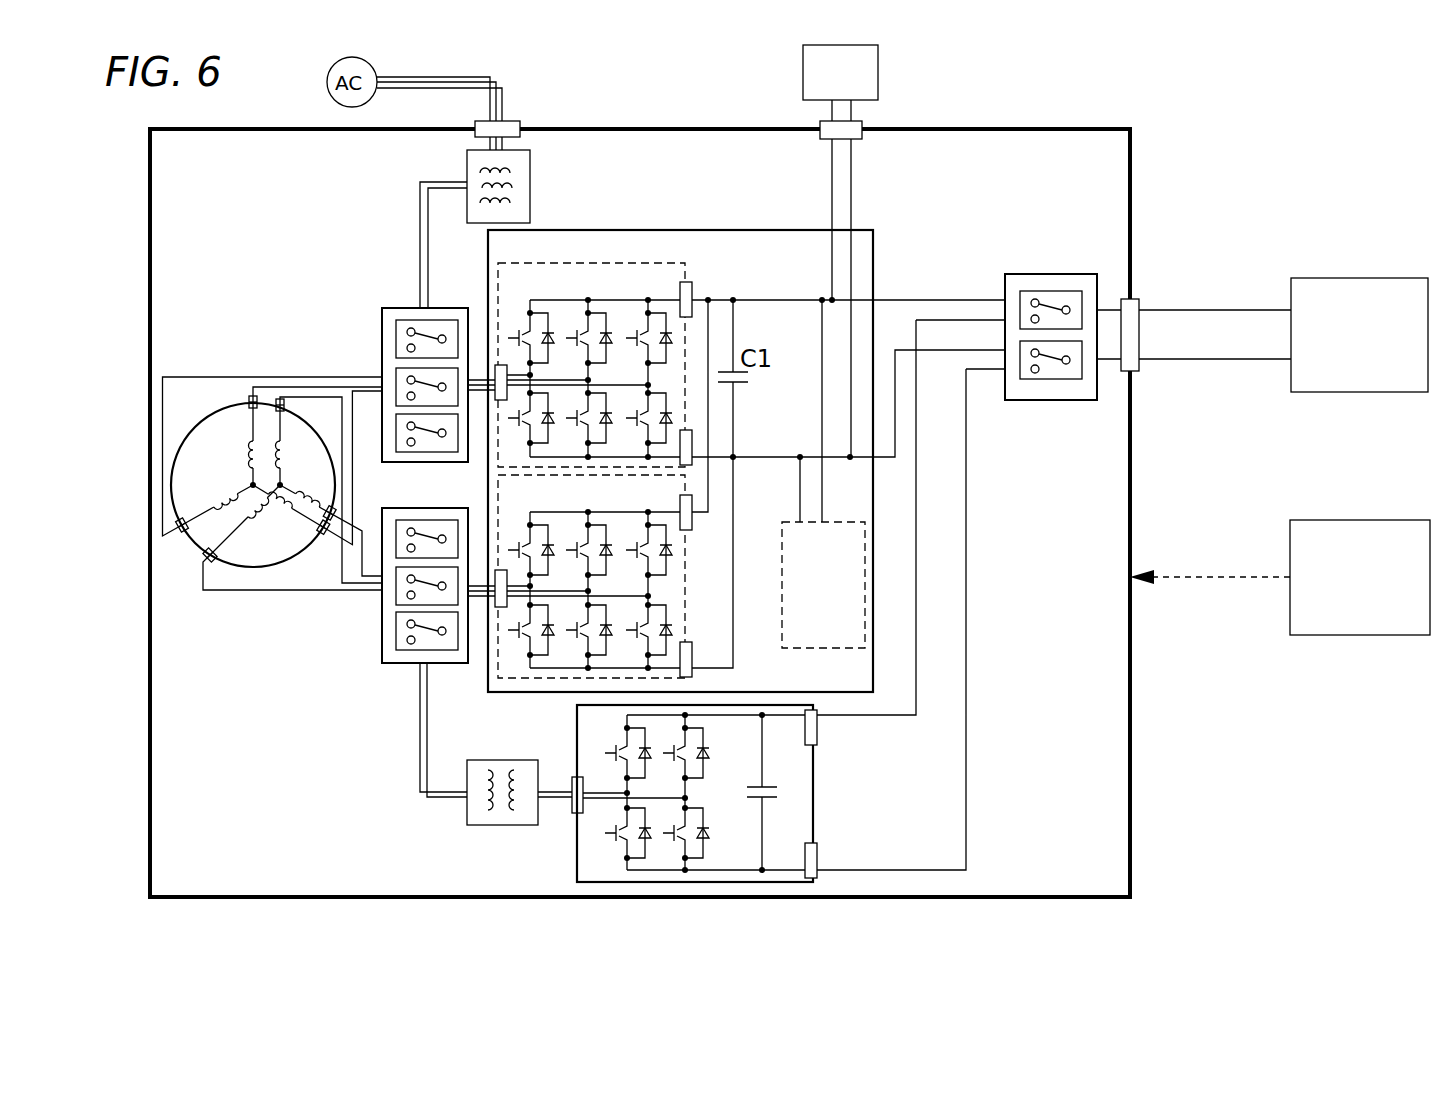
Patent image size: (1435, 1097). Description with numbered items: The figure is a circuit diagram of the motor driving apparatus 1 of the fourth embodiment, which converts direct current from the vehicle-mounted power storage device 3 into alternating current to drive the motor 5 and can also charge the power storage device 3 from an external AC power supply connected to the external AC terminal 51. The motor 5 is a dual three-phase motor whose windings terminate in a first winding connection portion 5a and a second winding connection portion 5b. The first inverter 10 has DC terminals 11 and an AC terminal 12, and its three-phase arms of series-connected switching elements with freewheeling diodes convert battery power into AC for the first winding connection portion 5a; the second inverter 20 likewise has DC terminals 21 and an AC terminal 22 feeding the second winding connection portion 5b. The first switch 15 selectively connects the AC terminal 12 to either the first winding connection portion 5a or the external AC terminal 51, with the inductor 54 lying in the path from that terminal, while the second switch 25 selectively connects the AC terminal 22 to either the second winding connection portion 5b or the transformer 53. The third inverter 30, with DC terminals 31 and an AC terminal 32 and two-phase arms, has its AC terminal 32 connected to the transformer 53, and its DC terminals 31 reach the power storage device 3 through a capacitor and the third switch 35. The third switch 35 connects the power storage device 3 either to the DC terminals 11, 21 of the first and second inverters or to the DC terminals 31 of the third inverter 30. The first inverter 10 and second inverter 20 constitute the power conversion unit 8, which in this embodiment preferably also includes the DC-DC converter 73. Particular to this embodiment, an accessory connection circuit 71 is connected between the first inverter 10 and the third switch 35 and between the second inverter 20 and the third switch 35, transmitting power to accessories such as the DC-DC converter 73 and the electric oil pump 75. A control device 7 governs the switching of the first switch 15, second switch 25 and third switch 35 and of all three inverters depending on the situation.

The motor driving apparatus 1 is at (1182, 106).
The power storage device 3 is at (1381, 277).
The motor 5 is at (178, 549).
The first winding connection portion 5a is at (248, 396).
The second winding connection portion 5b is at (283, 400).
The control device 7 is at (1366, 520).
The power conversion unit 8 is at (875, 263).
The first inverter 10 is at (630, 262).
The DC terminals 11 is at (693, 290).
The AC terminal 12 is at (492, 364).
The first switch 15 is at (398, 306).
The second inverter 20 is at (528, 680).
The DC terminals 21 is at (694, 524).
The AC terminal 22 is at (493, 608).
The second switch 25 is at (390, 666).
The third inverter 30 is at (720, 884).
The DC terminals 31 is at (818, 728).
The AC terminal 32 is at (573, 815).
The third switch 35 is at (1058, 274).
The external AC terminal 51 is at (512, 114).
The transformer 53 is at (497, 826).
The inductor 54 is at (533, 183).
The accessory connection circuit 71 is at (843, 475).
The DC-DC converter 73 is at (866, 581).
The electric oil pump 75 is at (880, 70).